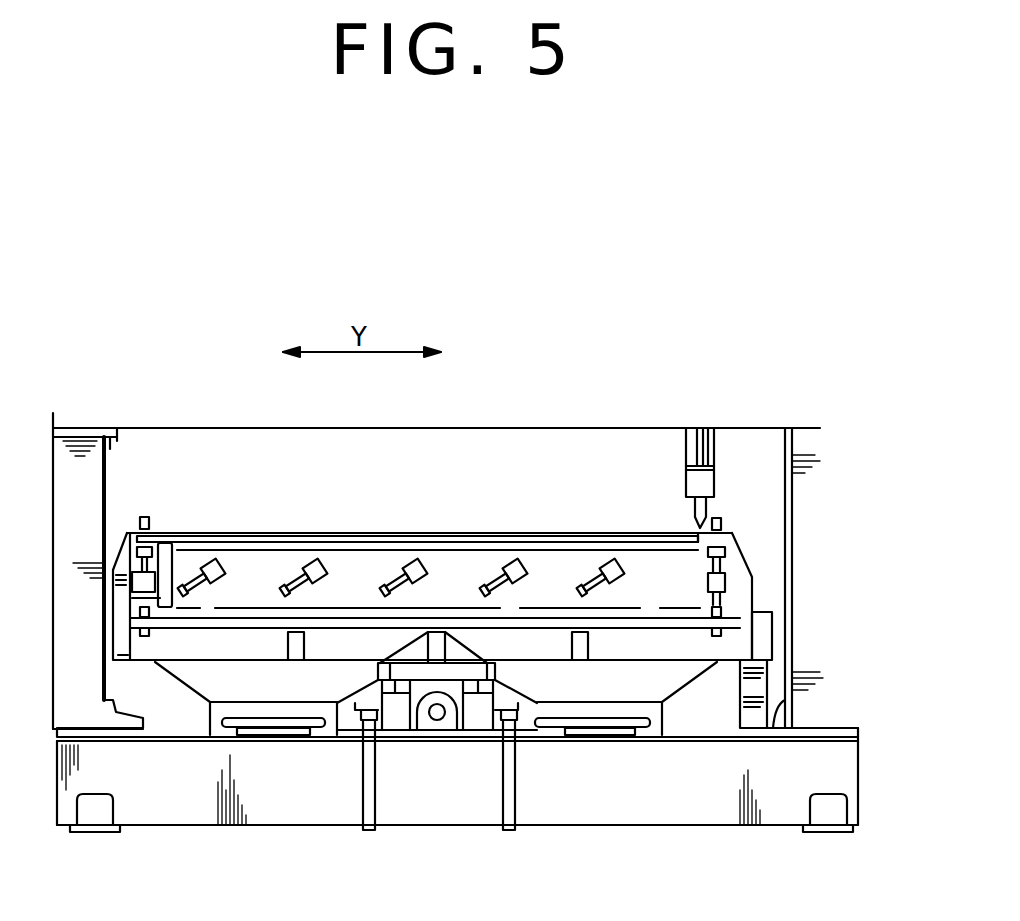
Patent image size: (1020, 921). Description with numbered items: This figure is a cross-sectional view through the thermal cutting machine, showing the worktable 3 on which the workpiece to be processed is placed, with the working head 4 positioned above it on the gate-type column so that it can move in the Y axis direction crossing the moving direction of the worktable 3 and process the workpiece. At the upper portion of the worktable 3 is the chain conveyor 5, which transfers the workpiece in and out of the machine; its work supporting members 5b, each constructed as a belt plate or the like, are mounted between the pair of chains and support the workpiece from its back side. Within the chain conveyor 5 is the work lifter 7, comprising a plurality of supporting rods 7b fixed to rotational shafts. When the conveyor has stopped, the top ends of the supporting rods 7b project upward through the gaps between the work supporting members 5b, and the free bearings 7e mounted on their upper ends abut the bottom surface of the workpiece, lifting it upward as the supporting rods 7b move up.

The worktable 3 is at (680, 682).
The working head 4 is at (690, 445).
The chain conveyor 5 is at (690, 597).
The work supporting members 5b is at (644, 537).
The work lifter 7 is at (606, 596).
The supporting rods 7b is at (597, 586).
The free bearings 7e is at (483, 598).